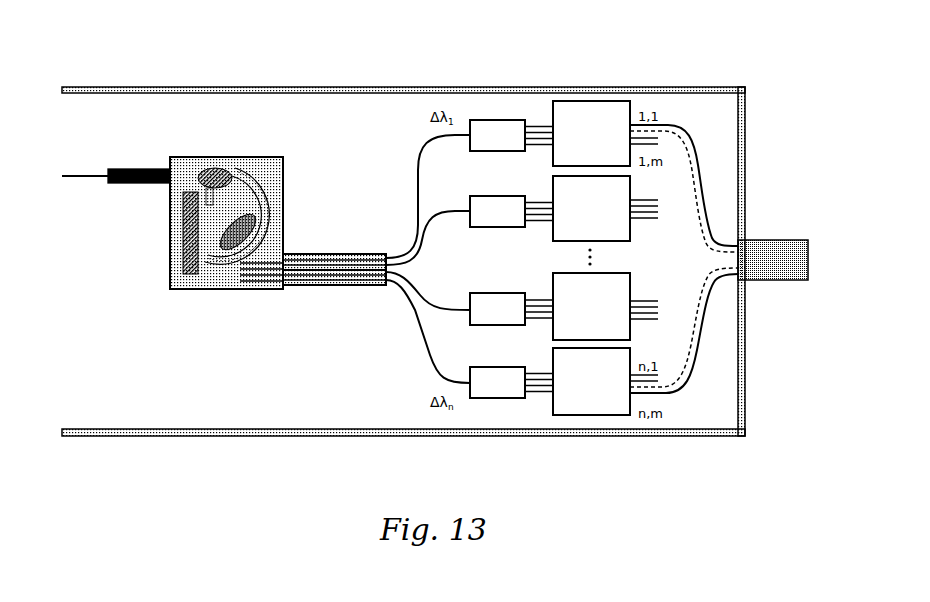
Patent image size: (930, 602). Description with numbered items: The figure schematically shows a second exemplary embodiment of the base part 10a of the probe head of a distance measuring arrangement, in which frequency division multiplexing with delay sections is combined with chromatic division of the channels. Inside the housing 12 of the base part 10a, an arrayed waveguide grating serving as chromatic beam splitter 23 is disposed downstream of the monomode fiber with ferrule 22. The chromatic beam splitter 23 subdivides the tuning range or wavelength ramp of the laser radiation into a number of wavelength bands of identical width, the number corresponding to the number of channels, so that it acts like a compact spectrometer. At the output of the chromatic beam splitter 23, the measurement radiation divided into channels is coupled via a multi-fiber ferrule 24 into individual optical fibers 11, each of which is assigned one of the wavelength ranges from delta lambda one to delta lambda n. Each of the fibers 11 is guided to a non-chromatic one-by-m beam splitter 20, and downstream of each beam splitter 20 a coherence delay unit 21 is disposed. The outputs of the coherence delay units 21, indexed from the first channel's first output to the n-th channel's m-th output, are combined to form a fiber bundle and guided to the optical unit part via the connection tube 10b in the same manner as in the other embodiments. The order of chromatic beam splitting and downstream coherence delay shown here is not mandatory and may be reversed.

The base part 10a is at (187, 462).
The connection tube 10b is at (779, 300).
The optical fibers 11 is at (425, 348).
The housing 12 is at (250, 85).
The non-chromatic 1×m beam splitter 20 is at (502, 300).
The coherence delay unit 21 is at (587, 288).
The monomode fiber with ferrule 22 is at (126, 170).
The chromatic beam splitter 23 is at (260, 172).
The multi-fiber ferrule 24 is at (302, 265).